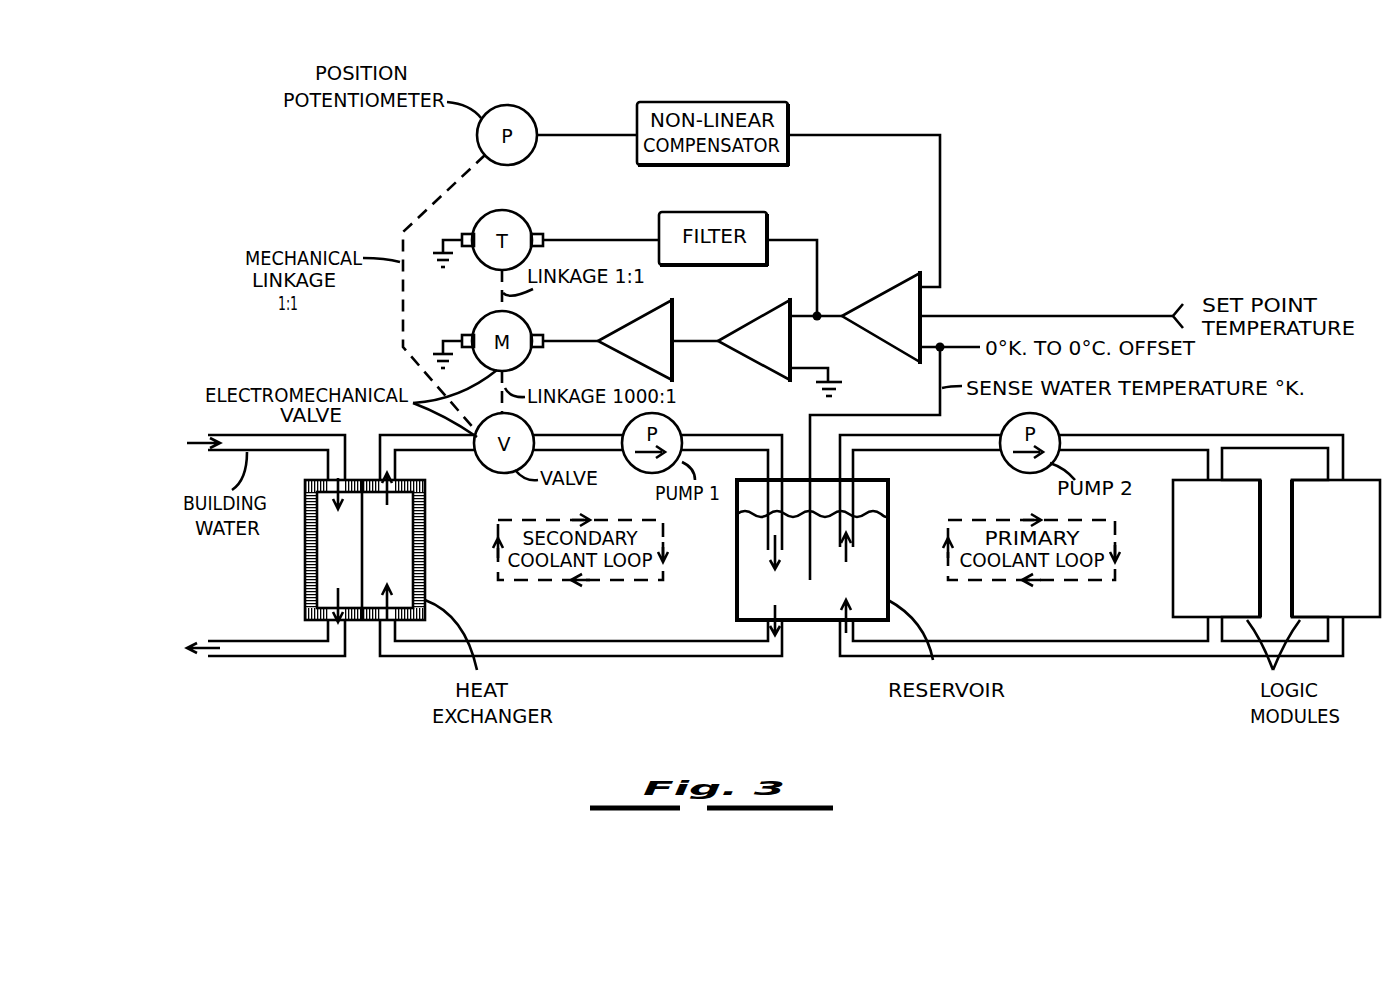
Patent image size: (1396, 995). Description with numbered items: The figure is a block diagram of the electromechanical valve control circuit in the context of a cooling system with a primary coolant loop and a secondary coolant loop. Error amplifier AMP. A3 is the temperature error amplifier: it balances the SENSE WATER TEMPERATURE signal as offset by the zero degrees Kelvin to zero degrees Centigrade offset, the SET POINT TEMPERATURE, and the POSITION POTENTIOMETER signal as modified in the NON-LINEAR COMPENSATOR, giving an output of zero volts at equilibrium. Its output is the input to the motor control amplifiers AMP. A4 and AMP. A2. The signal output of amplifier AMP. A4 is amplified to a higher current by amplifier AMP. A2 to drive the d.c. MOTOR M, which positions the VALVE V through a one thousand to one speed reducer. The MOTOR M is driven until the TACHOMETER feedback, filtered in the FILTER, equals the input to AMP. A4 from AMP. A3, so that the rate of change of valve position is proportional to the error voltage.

The amplifier A2 is at (642, 316).
The error amplifier A3 is at (900, 286).
The amplifier A4 is at (773, 312).